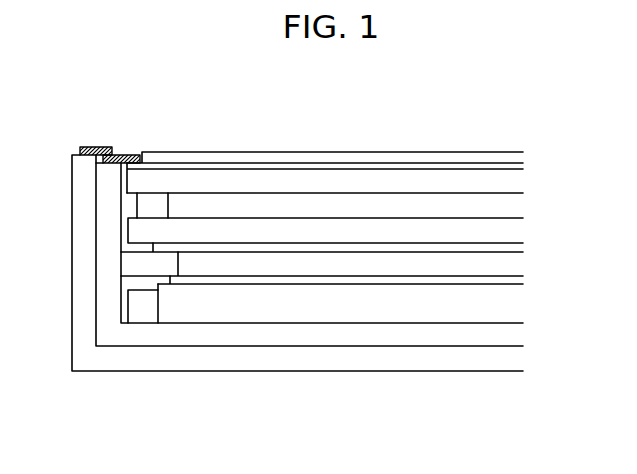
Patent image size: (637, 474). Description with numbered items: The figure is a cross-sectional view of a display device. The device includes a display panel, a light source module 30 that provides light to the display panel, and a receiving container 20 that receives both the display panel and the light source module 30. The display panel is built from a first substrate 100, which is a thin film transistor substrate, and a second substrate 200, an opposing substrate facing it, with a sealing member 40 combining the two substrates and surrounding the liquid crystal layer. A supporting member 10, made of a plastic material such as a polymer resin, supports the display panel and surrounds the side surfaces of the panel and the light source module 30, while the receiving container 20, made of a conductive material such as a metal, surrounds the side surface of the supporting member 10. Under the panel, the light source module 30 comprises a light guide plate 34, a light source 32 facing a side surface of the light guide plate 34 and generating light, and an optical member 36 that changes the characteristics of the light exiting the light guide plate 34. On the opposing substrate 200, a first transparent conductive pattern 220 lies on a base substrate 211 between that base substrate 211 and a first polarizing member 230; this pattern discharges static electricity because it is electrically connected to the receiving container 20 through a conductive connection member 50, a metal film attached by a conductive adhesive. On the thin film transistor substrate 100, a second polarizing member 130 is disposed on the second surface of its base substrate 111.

The supporting member 10 is at (108, 340).
The receiving container 20 is at (82, 341).
The light source module 30 is at (325, 362).
The light source 32 is at (143, 357).
The light guide plate 34 is at (199, 320).
The optical member 36 is at (252, 278).
The sealing member 40 is at (153, 202).
The conductive connection member 50 is at (92, 147).
The first substrate 100 is at (370, 240).
The base substrate 111 is at (517, 228).
The second polarizing member 130 is at (517, 248).
The second substrate 200 is at (373, 174).
The base substrate 211 is at (352, 193).
The first transparent conductive pattern 220 is at (517, 167).
The first polarizing member 230 is at (517, 155).